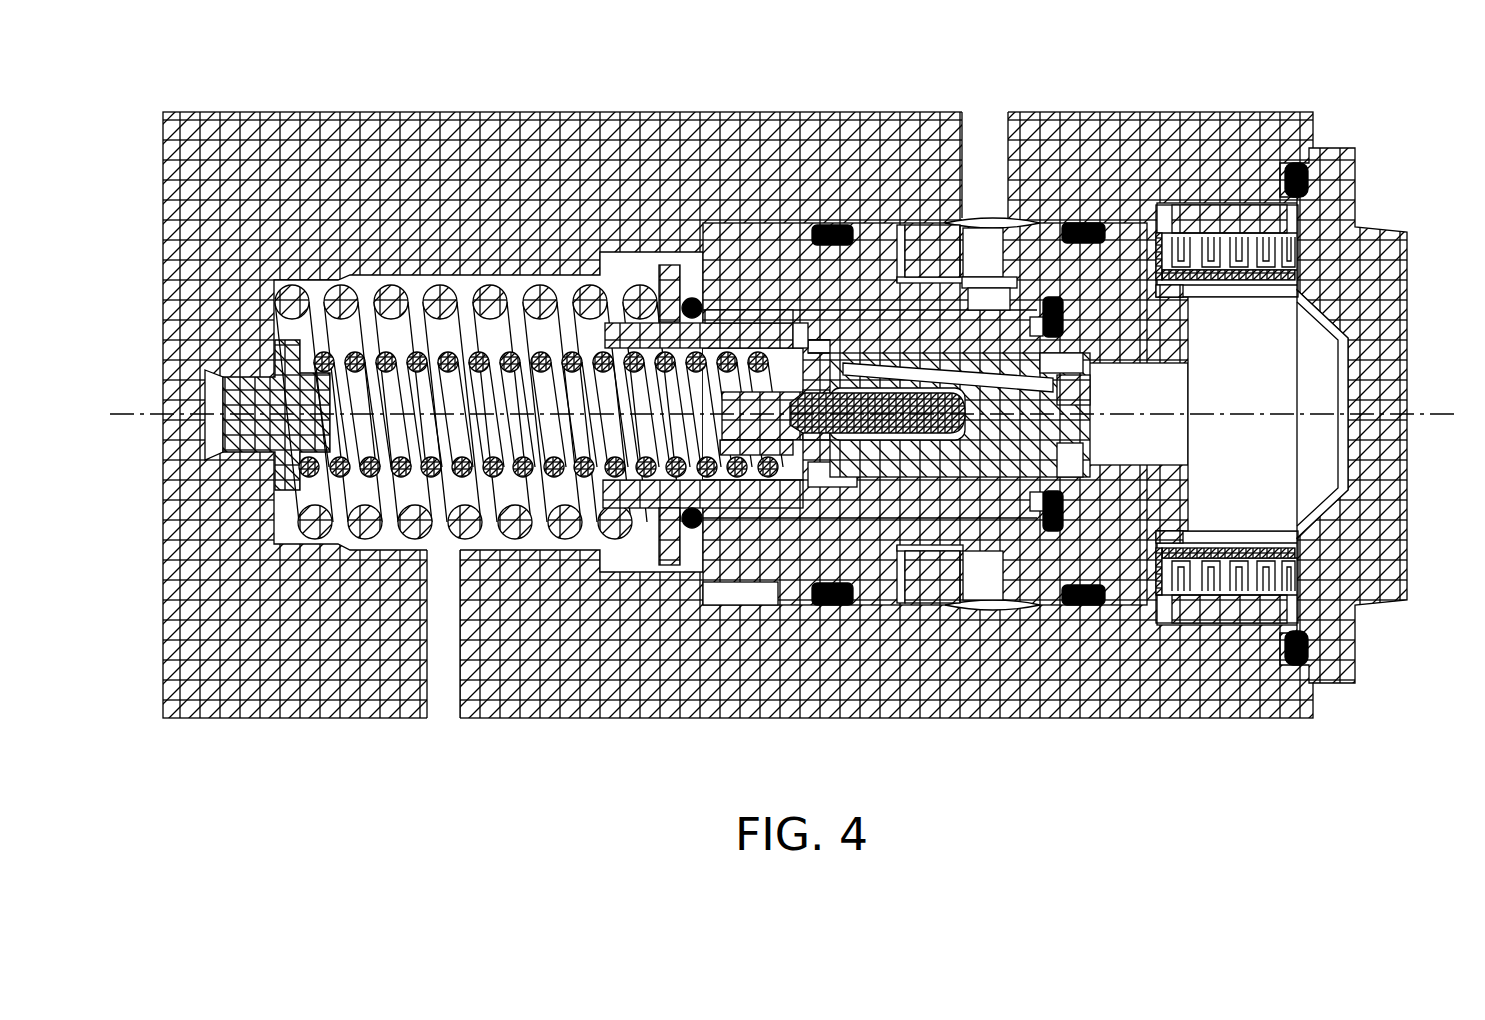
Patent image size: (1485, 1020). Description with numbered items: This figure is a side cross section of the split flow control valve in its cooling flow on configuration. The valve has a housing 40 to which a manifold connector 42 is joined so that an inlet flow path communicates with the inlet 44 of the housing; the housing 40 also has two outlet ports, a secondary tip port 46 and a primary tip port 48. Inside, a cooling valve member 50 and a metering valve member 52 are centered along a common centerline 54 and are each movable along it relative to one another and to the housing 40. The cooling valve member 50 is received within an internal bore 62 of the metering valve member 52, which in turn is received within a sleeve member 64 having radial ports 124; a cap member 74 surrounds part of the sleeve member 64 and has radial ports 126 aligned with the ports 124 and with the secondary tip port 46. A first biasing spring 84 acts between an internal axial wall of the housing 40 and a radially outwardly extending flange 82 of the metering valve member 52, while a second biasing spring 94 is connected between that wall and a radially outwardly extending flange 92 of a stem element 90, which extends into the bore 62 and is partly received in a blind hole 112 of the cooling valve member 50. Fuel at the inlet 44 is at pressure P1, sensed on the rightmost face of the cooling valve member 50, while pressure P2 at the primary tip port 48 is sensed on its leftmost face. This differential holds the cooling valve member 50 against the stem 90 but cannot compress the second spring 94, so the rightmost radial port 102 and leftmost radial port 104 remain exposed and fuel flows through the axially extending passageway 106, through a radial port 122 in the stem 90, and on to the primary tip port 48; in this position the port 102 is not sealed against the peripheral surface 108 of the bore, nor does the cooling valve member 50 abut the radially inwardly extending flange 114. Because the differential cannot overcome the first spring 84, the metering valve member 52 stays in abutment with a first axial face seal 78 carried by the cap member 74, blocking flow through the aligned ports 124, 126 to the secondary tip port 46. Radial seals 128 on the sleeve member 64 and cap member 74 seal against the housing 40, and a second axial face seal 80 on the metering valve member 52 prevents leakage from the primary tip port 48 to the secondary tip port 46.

The housing 40 is at (207, 110).
The manifold connector 42 is at (1360, 178).
The inlet 44 is at (1405, 392).
The secondary tip port 46 is at (980, 106).
The primary tip port 48 is at (440, 724).
The cooling valve member 50 is at (1047, 510).
The metering valve member 52 is at (938, 500).
The common centerline 54 is at (128, 427).
The internal bore 62 is at (626, 393).
The sleeve member 64 is at (735, 223).
The cap member 74 is at (1158, 290).
The first axial face seal 78 is at (1055, 372).
The second axial face seal 80 is at (692, 530).
The radially outwardly extending flange 82 is at (669, 263).
The first biasing spring 84 is at (388, 286).
The stem element 90 is at (822, 462).
The radially outwardly extending flange 92 is at (779, 360).
The second biasing spring 94 is at (358, 352).
The rightmost radial port 102 is at (1120, 362).
The leftmost radial port 104 is at (850, 350).
The axially extending passageway 106 is at (1035, 330).
The peripheral surface 108 is at (876, 465).
The blind hole 112 is at (990, 475).
The radially inwardly extending flange 114 is at (803, 352).
The radial port 122 is at (757, 472).
The radial ports 124 is at (942, 288).
The radial ports 126 is at (1000, 300).
The radial seals 128 is at (1085, 223).
The pressure at the inlet P1 is at (1228, 320).
The pressure at the primary tip port P2 is at (826, 343).